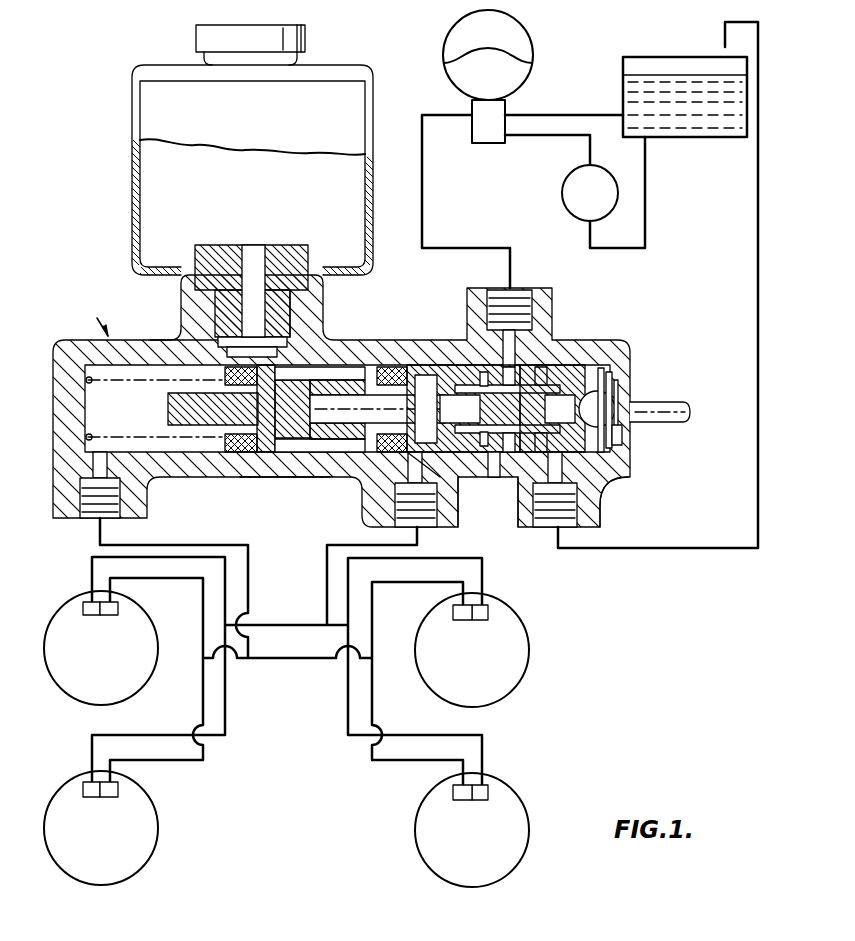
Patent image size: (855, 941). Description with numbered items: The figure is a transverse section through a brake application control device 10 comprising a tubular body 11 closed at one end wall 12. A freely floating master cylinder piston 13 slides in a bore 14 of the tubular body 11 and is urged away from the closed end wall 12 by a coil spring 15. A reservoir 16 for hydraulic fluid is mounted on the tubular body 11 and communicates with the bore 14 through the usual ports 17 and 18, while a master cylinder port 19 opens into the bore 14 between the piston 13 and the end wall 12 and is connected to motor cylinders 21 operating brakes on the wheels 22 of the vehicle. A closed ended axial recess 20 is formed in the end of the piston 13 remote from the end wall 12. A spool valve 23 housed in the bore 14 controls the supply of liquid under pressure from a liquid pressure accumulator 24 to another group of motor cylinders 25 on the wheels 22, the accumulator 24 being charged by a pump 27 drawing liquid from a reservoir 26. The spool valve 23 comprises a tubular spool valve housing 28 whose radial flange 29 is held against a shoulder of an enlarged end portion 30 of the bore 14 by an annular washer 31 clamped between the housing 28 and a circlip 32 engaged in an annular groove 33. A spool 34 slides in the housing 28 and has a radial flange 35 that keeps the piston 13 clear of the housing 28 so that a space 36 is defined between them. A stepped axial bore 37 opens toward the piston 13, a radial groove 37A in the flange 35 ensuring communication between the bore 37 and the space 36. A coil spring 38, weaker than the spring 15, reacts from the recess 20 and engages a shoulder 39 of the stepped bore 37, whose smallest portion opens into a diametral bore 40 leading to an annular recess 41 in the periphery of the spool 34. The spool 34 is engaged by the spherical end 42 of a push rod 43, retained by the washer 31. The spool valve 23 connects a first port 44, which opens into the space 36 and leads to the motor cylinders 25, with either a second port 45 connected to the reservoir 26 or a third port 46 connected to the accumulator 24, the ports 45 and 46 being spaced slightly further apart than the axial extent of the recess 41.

The brake application control device 10 is at (88, 315).
The tubular body 11 is at (222, 462).
The closed end wall 12 is at (74, 410).
The master cylinder piston 13 is at (175, 410).
The bore 14 is at (290, 465).
The coil spring 15 is at (160, 360).
The reservoir 16 is at (142, 200).
The port 17 is at (215, 300).
The port 18 is at (292, 335).
The master cylinder port 19 is at (106, 470).
The closed ended axial recess 20 is at (340, 380).
The motor cylinders 21 is at (110, 617).
The wheels 22 is at (125, 690).
The spool valve 23 is at (520, 392).
The liquid pressure accumulator 24 is at (512, 38).
The motor cylinders 25 is at (90, 617).
The reservoir 26 is at (632, 98).
The pump 27 is at (572, 193).
The tubular spool valve housing 28 is at (495, 455).
The radial flange 29 is at (597, 390).
The enlarged end portion 30 is at (610, 492).
The annular washer 31 is at (618, 385).
The circlip 32 is at (612, 375).
The annular groove 33 is at (606, 372).
The spool 34 is at (450, 372).
The radial flange 35 is at (420, 380).
The space 36 is at (410, 455).
The stepped axial bore 37 is at (468, 345).
The radial groove 37A is at (390, 378).
The coil spring 38 is at (330, 462).
The shoulder 39 is at (470, 478).
The diametral bore 40 is at (560, 512).
The annular recess 41 is at (528, 490).
The spherical end 42 is at (620, 432).
The push rod 43 is at (670, 408).
The first port 44 is at (396, 505).
The second port 45 is at (598, 512).
The third port 46 is at (500, 372).